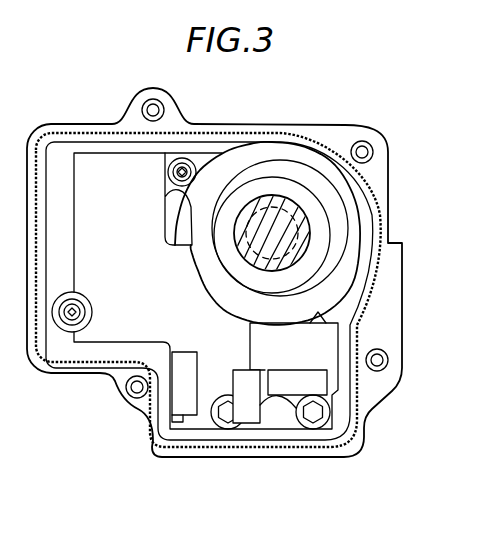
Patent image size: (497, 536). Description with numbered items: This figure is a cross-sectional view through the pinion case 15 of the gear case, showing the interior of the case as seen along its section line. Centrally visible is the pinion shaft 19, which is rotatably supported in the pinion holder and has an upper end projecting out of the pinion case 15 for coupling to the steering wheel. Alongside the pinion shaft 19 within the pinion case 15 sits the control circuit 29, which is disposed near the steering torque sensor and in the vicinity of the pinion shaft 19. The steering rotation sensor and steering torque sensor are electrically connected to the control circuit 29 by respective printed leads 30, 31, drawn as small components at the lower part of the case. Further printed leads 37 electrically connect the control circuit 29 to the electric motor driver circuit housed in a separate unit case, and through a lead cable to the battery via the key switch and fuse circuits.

The pinion case 15 is at (388, 323).
The pinion shaft 19 is at (276, 208).
The control circuit 29 is at (102, 160).
The printed leads 30 is at (252, 418).
The printed leads 31 is at (288, 387).
The printed leads 37 is at (182, 395).